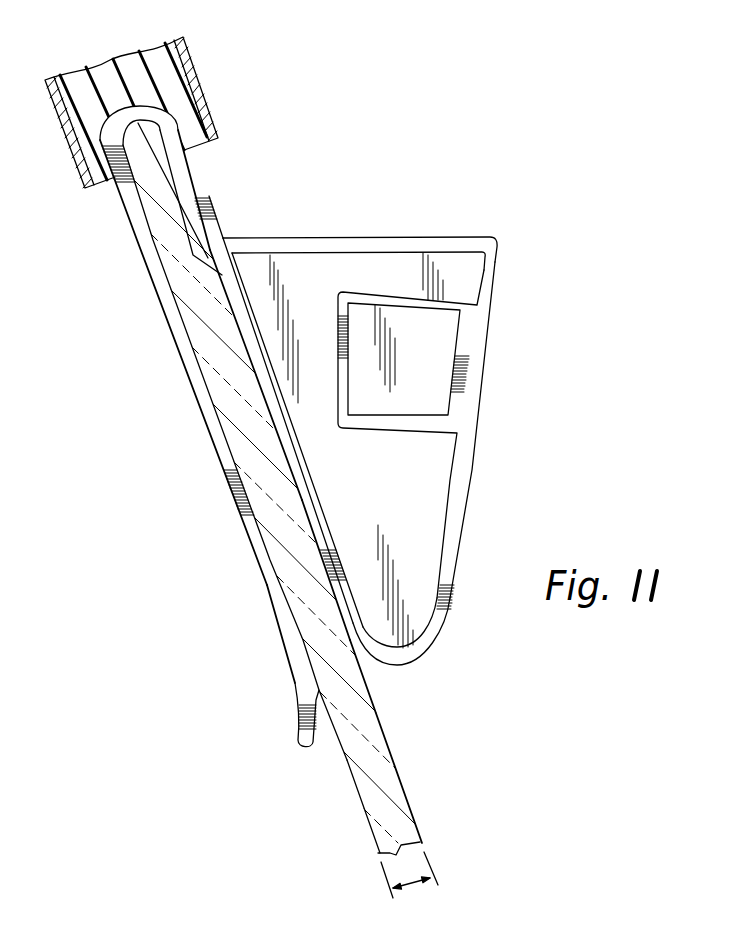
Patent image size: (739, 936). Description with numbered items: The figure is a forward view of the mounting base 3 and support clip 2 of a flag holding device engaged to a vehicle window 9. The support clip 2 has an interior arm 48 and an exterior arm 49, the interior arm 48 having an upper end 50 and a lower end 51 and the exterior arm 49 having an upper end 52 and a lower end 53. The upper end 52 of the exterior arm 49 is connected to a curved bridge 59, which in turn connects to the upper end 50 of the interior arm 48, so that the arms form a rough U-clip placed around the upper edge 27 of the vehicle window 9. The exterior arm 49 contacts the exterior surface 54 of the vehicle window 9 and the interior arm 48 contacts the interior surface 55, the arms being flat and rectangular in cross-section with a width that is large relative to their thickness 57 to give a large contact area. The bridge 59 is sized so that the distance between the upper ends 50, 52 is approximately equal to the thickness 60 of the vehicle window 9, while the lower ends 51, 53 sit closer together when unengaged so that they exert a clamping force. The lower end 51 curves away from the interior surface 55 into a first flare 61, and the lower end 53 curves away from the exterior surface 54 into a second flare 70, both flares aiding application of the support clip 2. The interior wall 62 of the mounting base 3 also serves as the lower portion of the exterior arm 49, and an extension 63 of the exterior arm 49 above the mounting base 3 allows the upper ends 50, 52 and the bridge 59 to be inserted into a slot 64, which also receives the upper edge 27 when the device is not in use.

The support clip 2 is at (160, 318).
The mounting base 3 is at (468, 504).
The vehicle window 9 is at (362, 737).
The upper edge 27 is at (127, 188).
The interior arm 48 is at (218, 433).
The exterior arm 49 is at (288, 450).
The upper end 50 is at (131, 220).
The lower end 51 is at (267, 586).
The upper end 52 is at (193, 179).
The lower end 53 is at (339, 588).
The exterior surface 54 is at (402, 787).
The interior surface 55 is at (360, 808).
The thickness 57 is at (185, 386).
The bridge 59 is at (130, 106).
The thickness 60 is at (412, 883).
The first flare 61 is at (297, 727).
The interior wall 62 is at (300, 490).
The extension 63 is at (213, 230).
The slot 64 is at (172, 112).
The second flare 70 is at (377, 653).